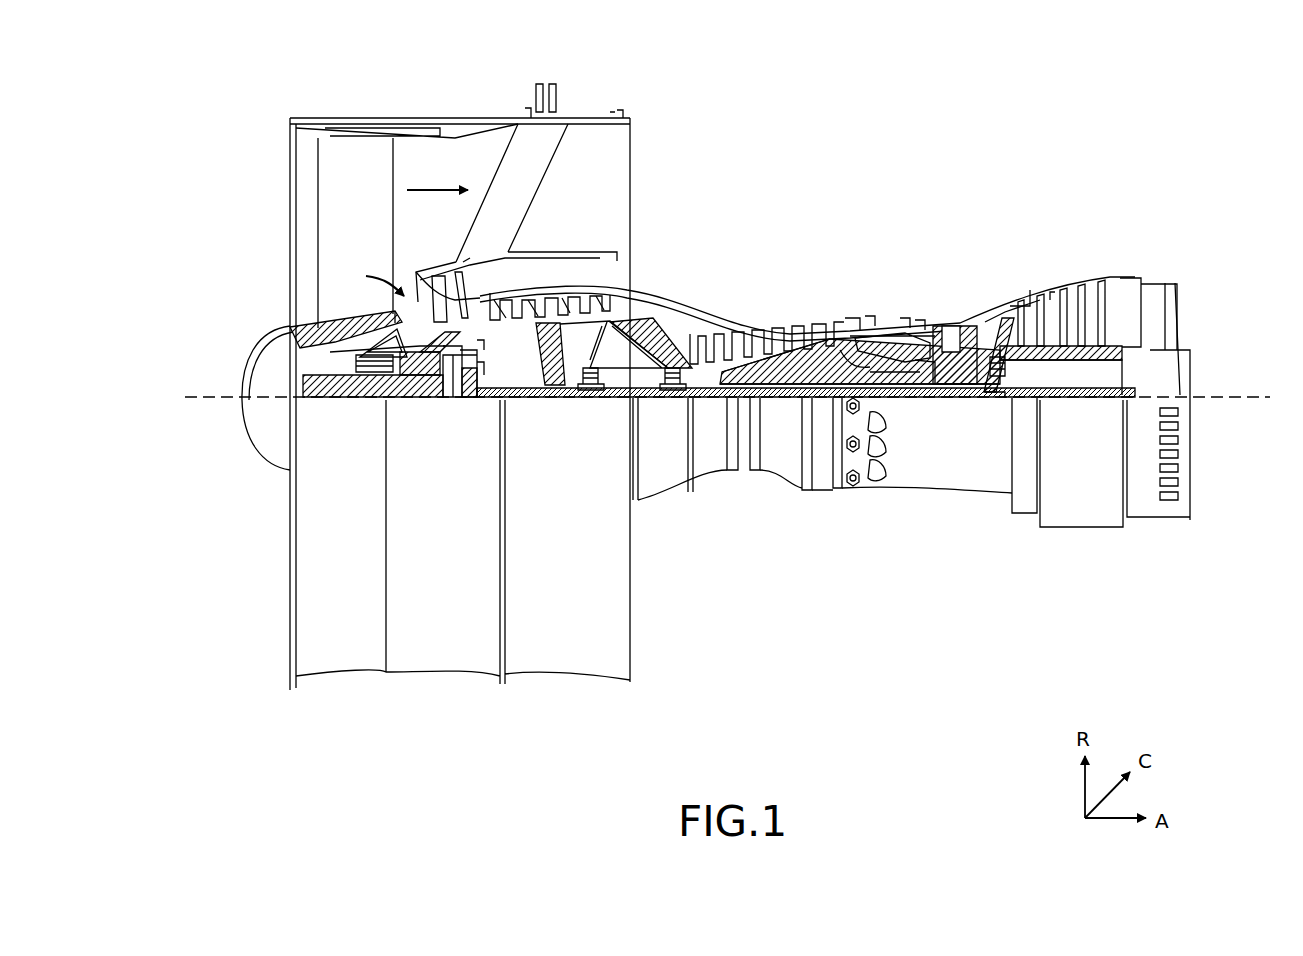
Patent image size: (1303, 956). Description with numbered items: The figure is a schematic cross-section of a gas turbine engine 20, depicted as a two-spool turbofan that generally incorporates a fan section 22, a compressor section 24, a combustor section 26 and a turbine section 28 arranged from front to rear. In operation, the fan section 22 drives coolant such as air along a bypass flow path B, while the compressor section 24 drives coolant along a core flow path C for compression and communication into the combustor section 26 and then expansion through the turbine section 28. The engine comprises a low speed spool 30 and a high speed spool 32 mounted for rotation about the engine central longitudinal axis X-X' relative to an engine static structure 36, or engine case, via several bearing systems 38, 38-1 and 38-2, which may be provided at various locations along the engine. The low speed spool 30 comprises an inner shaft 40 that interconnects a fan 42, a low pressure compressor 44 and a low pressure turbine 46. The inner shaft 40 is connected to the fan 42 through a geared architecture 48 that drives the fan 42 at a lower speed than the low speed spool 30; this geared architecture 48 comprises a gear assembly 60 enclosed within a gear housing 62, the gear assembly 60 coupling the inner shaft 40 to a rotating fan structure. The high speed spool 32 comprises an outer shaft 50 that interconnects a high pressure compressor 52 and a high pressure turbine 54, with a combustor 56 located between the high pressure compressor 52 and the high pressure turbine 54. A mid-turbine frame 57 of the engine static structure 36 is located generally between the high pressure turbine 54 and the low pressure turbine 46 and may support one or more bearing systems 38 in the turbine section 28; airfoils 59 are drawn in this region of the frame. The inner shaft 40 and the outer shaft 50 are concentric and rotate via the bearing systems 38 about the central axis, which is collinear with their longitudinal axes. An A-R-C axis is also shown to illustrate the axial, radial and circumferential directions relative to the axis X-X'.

The gas turbine engine 20 is at (932, 116).
The fan section 22 is at (478, 100).
The compressor section 24 is at (508, 218).
The combustor section 26 is at (935, 218).
The turbine section 28 is at (1125, 218).
The low speed spool 30 is at (786, 404).
The high speed spool 32 is at (836, 360).
The engine static structure 36 is at (443, 656).
The bearing system 38 is at (996, 378).
The bearing system 38-1 is at (364, 376).
The bearing system 38-2 is at (586, 384).
The inner shaft 40 is at (652, 399).
The fan 42 is at (358, 240).
The low pressure compressor 44 is at (577, 304).
The low pressure turbine 46 is at (1075, 292).
The geared architecture 48 is at (459, 430).
The outer shaft 50 is at (882, 378).
The high pressure compressor 52 is at (794, 360).
The high pressure turbine 54 is at (956, 330).
The combustor 56 is at (892, 338).
The mid-turbine frame 57 is at (1010, 330).
The airfoils/vanes 59 is at (1005, 318).
The gear assembly 60 is at (484, 370).
The gear housing 62 is at (484, 348).
The bypass flow path B is at (438, 192).
The core flow path C is at (374, 280).
The engine central longitudinal axis X is at (216, 364).
The engine central longitudinal axis X' is at (1228, 364).